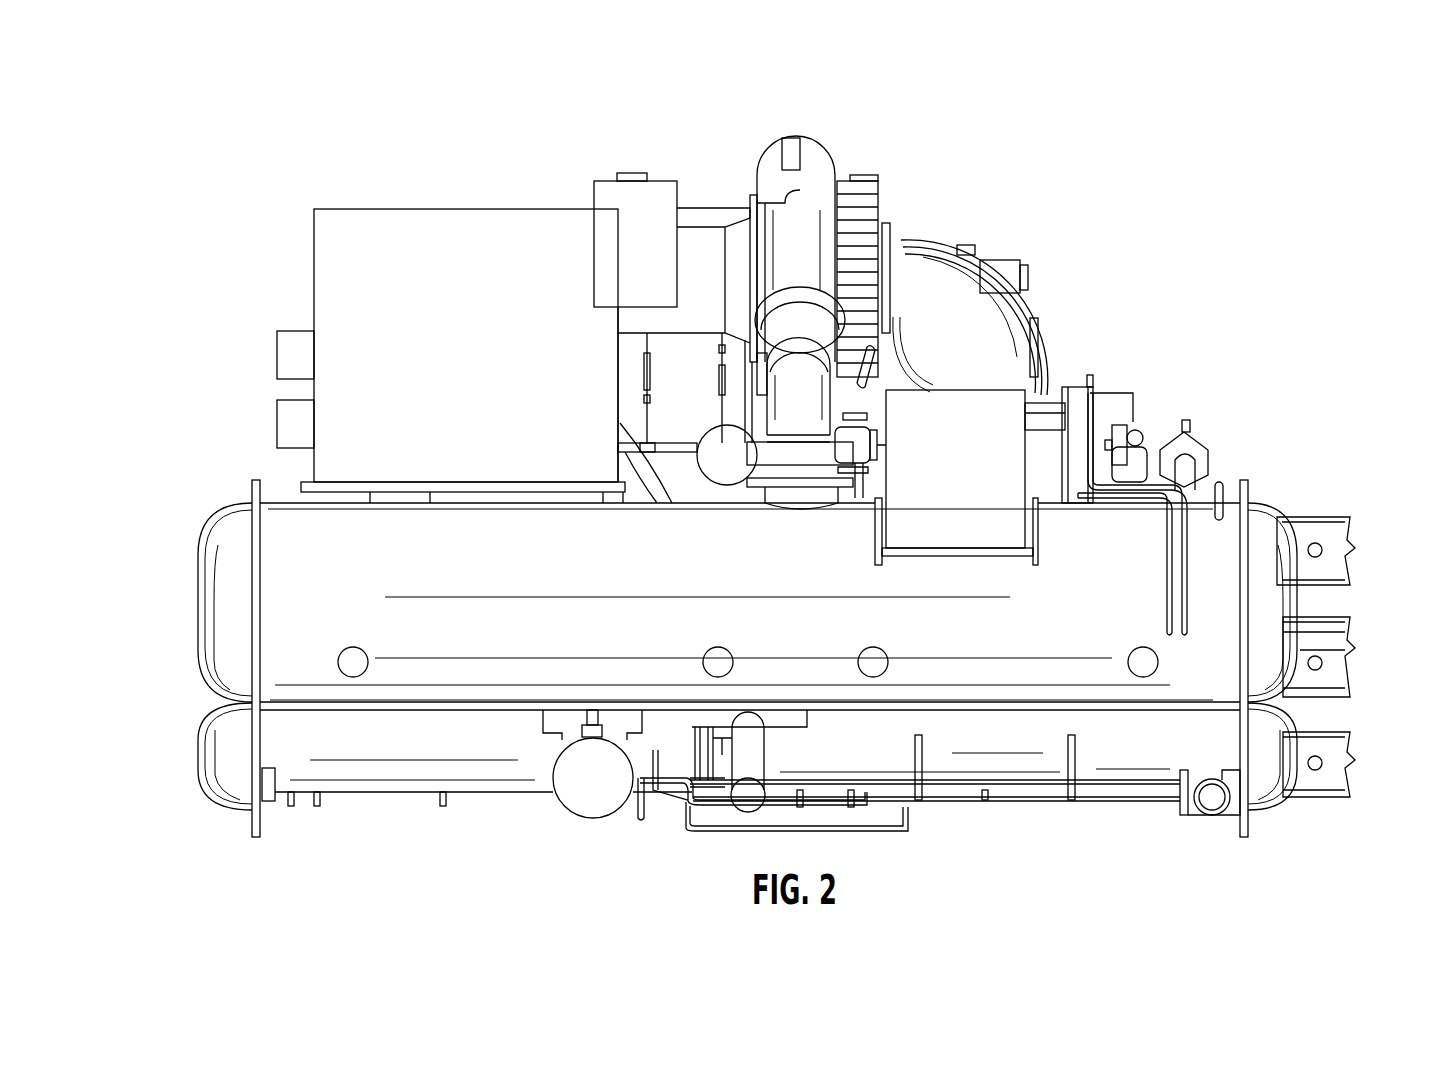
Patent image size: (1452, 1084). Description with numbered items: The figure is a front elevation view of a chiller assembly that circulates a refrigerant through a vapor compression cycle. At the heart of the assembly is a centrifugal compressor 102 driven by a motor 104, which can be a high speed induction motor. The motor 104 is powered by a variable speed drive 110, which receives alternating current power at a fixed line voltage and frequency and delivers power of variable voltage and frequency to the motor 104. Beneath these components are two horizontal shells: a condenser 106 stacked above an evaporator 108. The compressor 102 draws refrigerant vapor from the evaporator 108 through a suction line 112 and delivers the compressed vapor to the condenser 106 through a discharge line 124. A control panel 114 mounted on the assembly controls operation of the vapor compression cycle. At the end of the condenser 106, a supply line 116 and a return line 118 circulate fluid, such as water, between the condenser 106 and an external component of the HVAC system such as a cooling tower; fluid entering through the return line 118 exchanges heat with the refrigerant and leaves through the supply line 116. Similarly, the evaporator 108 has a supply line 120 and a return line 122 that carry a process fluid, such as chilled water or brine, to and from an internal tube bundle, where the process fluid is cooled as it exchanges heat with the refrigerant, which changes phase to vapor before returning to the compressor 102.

The compressor 102 is at (812, 158).
The motor 104 is at (698, 233).
The condenser 106 is at (280, 558).
The evaporator 108 is at (362, 742).
The variable speed drive 110 is at (452, 226).
The suction line 112 is at (962, 315).
The control panel 114 is at (993, 413).
The supply line 116 is at (1337, 527).
The return line 118 is at (1340, 672).
The supply line 120 is at (1340, 627).
The return line 122 is at (1337, 748).
The discharge line 124 is at (800, 385).